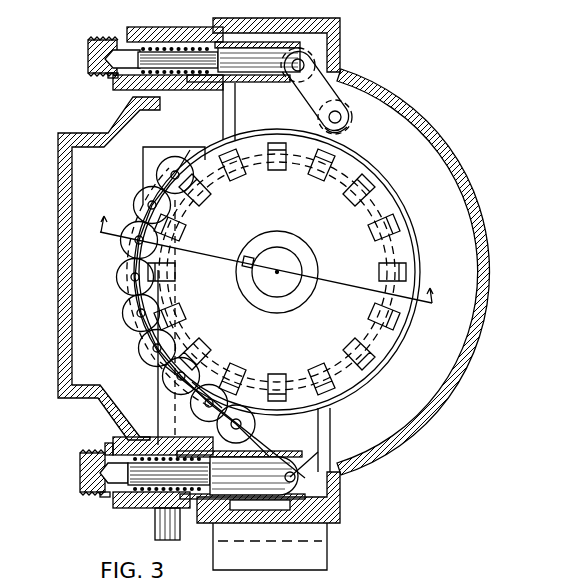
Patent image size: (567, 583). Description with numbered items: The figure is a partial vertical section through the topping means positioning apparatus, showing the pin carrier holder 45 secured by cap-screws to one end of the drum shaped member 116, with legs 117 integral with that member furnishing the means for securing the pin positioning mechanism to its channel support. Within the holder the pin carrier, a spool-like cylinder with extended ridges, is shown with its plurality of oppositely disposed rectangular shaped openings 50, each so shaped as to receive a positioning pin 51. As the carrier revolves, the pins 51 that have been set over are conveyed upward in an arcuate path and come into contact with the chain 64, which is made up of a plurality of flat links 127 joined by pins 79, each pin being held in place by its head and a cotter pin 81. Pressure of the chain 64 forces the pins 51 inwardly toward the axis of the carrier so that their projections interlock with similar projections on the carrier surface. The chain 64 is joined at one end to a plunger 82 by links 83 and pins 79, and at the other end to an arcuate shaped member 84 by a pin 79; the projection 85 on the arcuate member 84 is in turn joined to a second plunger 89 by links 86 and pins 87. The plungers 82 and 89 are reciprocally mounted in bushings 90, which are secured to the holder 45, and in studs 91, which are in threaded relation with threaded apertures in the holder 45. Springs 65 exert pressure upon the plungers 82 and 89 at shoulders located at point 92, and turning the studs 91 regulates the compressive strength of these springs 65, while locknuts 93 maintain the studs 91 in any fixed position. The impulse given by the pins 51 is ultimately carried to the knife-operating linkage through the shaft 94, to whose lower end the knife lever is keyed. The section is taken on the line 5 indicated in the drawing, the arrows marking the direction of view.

The pin carrier holder 45 is at (55, 308).
The drum shaped member 116 is at (345, 22).
The rectangular shaped openings 50 is at (395, 226).
The arcuate shaped member 84 is at (290, 134).
The positioning pins 51 is at (401, 259).
The section line 5- 5 is at (269, 251).
The chain 64 is at (122, 291).
The flat links 127 is at (128, 273).
The pins 79 is at (170, 173).
The studs 91 is at (100, 75).
The springs 65 is at (172, 30).
The shoulders 92 is at (212, 30).
The locknuts 93 is at (120, 88).
The plunger 89 is at (285, 82).
The bushings 90 is at (260, 85).
The shaft 94 is at (155, 540).
The links 86 is at (335, 98).
The pins 87 is at (300, 58).
The projection 85 is at (340, 135).
The links 83 is at (272, 447).
The cotter pin 81 is at (192, 414).
The plunger 82 is at (322, 462).
The legs 117 is at (322, 566).